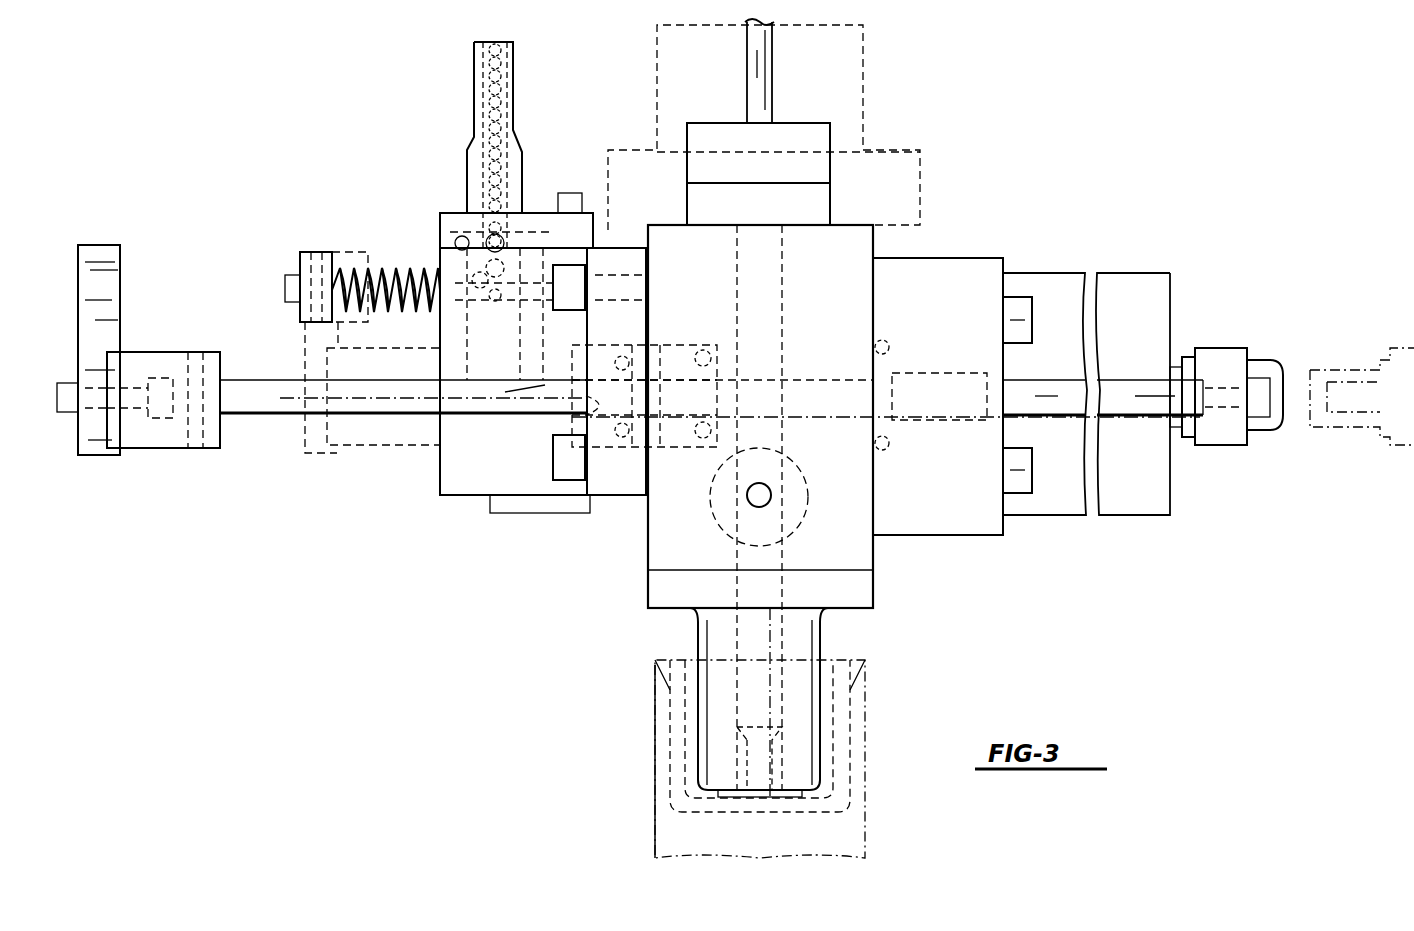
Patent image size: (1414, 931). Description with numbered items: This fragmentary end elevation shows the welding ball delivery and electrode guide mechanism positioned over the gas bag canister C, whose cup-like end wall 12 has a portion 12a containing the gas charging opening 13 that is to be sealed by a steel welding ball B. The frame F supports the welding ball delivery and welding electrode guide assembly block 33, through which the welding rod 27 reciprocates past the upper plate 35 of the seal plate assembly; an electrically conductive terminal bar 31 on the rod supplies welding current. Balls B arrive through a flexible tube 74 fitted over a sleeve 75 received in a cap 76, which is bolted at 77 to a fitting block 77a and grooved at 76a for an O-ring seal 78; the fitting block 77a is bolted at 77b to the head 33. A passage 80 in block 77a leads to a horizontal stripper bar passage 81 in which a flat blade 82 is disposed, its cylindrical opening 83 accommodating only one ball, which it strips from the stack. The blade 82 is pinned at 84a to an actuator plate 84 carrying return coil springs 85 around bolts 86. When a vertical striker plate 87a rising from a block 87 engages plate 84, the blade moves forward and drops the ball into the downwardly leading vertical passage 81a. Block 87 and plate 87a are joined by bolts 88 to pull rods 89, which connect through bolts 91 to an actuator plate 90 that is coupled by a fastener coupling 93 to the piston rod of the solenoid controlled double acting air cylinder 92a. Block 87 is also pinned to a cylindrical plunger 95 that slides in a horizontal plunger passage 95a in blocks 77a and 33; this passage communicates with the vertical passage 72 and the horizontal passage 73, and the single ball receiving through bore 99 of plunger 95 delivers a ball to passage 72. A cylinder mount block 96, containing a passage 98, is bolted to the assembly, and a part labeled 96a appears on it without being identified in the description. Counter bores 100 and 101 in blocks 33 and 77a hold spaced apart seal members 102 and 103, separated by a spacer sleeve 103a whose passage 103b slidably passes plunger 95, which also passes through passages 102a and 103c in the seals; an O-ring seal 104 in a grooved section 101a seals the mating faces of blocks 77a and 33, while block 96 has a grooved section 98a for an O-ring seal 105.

The cup-like end wall 12 is at (666, 730).
The portion of the end wall 12a is at (850, 815).
The opening 13 is at (748, 802).
The welding rod 27 is at (748, 60).
The terminal bar 31 is at (832, 210).
The welding ball delivery and welding electrode guide assembly block 33 is at (873, 565).
The upper plate 35 is at (790, 125).
The vertical passage 72 is at (448, 315).
The horizontal passage 73 is at (845, 380).
The flexible tube 74 is at (474, 70).
The sleeve 75 is at (513, 150).
The cap 76 is at (448, 228).
The groove 76a is at (476, 215).
The bolts 77 is at (570, 193).
The fitting block 77a is at (443, 473).
The bolts 77b is at (556, 458).
The O-ring seal 78 is at (462, 228).
The passage 80 is at (488, 290).
The horizontal stripper bar passage 81 is at (640, 278).
The vertical passage 81a is at (502, 392).
The flat blade 82 is at (628, 265).
The cylindrical opening 83 is at (515, 300).
The actuator plate 84 is at (352, 252).
The pin 84a is at (345, 252).
The return coil springs 85 is at (390, 268).
The bolts 86 is at (285, 285).
The block 87 is at (160, 355).
The vertical striker plate 87a is at (118, 282).
The bolts 88 is at (67, 415).
The pull rods 89 is at (1152, 340).
The actuator plate 90 is at (1218, 352).
The bolts 91 is at (1262, 425).
The air cylinder 92a is at (1085, 283).
The fastener coupling 93 is at (1262, 360).
The plunger 95 is at (235, 414).
The horizontal plunger passage 95a is at (759, 497).
The cylinder mount block 96 is at (975, 535).
The mounting boss 96a is at (1020, 495).
The passage 98 is at (925, 420).
The grooved section 98a is at (895, 375).
The single ball receiving cylindrical through bore 99 is at (492, 424).
The counter bore 100 is at (710, 340).
The counter bore 101 is at (622, 500).
The grooved section 101a is at (640, 285).
The seal member 102 is at (710, 350).
The passage 102a is at (715, 480).
The seal member 103 is at (613, 500).
The spacer sleeve 103a is at (705, 352).
The passage 103b is at (703, 440).
The passage 103c is at (570, 420).
The O-ring seal 104 is at (645, 500).
The O-ring seal 105 is at (885, 345).
The welding ball B is at (487, 100).
The gas bag canister C is at (645, 780).
The frame F is at (875, 98).